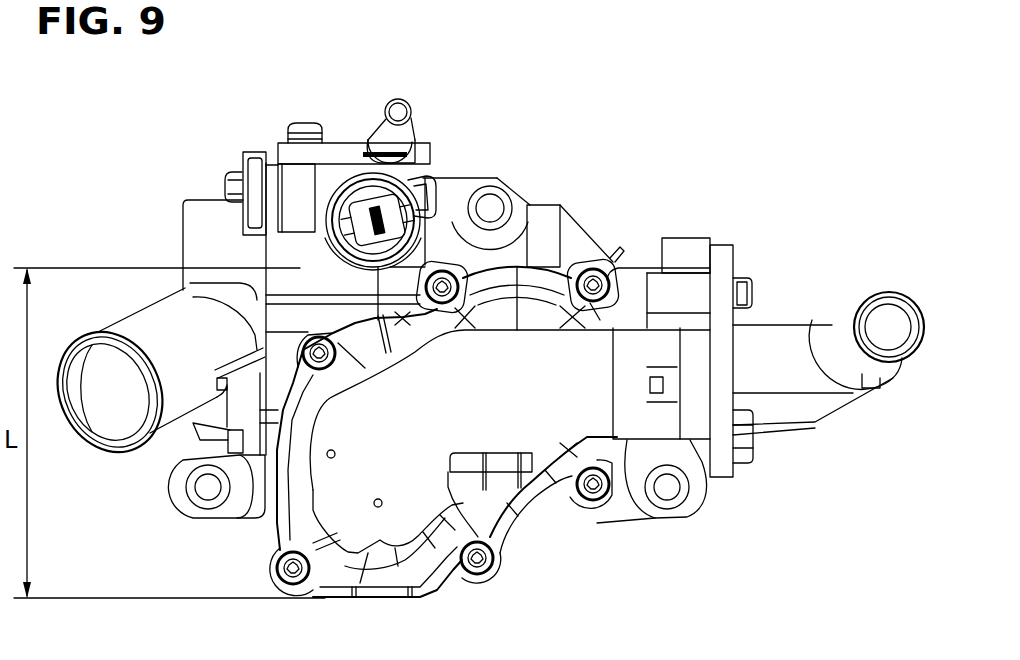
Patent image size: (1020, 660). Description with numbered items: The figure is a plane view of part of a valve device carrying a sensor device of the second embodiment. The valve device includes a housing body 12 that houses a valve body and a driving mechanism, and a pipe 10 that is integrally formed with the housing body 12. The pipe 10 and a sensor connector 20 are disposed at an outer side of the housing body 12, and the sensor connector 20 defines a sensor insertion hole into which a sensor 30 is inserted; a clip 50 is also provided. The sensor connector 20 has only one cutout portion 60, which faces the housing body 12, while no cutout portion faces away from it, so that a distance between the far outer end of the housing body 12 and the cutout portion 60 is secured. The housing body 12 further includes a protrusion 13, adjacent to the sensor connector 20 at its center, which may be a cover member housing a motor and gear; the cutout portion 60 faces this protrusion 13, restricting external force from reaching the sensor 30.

The pipe 10 is at (311, 255).
The sensor connector 20 is at (366, 184).
The sensor 30 is at (386, 203).
The clip 50 is at (418, 198).
The cutout portion 60 is at (420, 240).
The housing body 12 is at (566, 524).
The protrusion 13 is at (477, 390).